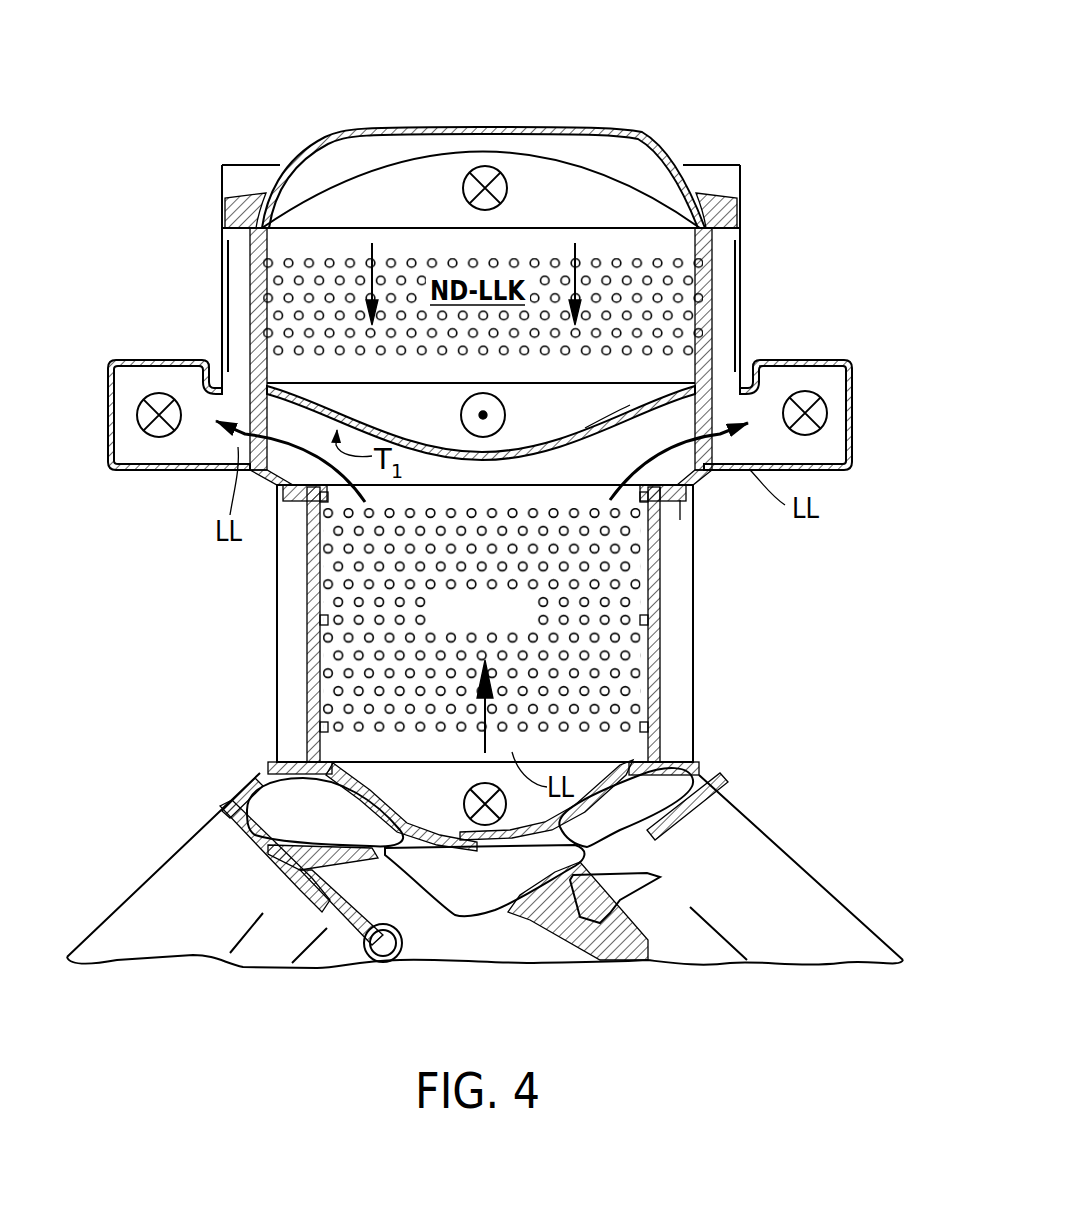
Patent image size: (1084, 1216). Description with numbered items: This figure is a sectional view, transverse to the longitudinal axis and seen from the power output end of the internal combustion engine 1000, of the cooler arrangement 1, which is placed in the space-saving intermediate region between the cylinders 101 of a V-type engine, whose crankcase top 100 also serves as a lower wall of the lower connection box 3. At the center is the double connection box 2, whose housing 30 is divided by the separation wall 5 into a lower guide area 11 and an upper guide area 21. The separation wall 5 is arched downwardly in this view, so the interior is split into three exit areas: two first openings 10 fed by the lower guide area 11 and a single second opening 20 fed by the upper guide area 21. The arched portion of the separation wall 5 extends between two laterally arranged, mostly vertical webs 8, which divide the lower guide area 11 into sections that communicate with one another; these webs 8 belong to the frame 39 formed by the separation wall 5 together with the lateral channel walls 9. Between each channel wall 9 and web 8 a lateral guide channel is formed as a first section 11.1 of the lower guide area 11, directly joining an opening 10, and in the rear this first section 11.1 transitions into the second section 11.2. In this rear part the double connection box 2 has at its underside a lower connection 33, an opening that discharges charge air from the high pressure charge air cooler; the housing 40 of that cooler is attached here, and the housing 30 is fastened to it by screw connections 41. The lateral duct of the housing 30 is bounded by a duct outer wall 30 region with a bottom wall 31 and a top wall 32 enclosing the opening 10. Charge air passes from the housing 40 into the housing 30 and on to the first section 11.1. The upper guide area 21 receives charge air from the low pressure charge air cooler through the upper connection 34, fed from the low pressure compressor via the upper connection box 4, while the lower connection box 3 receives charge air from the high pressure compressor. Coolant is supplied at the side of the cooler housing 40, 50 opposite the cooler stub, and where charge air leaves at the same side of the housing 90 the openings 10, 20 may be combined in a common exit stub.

The cooler arrangement 1 is at (186, 80).
The internal combustion engine 1000 is at (525, 50).
The double connection box 2 is at (860, 354).
The lower connection box 3 is at (622, 762).
The upper connection box 4 is at (625, 130).
The separation wall 5 is at (590, 430).
The webs 8 is at (770, 367).
The lateral channel walls 9 is at (787, 367).
The first openings 10 is at (150, 393).
The lower guide area 11 is at (820, 365).
The first section of the lower guide area 11.1 is at (840, 430).
The second section of the lower guide area 11.2 is at (462, 468).
The second opening 20 is at (510, 416).
The upper guide area 21 is at (422, 422).
The housing of the double connection box 30 is at (855, 398).
The duct bottom wall 31 is at (835, 470).
The duct top wall 32 is at (797, 367).
The lower connection 33 is at (700, 490).
The upper connection 34 is at (735, 363).
The frame 39 is at (712, 470).
The housing of the high pressure charge air cooler 40 is at (690, 600).
The screw connections 41 is at (690, 505).
The cooler housing 50 is at (741, 228).
The housing 90 is at (196, 352).
The crankcase top 100 is at (720, 769).
The cylinders 101 is at (202, 925).